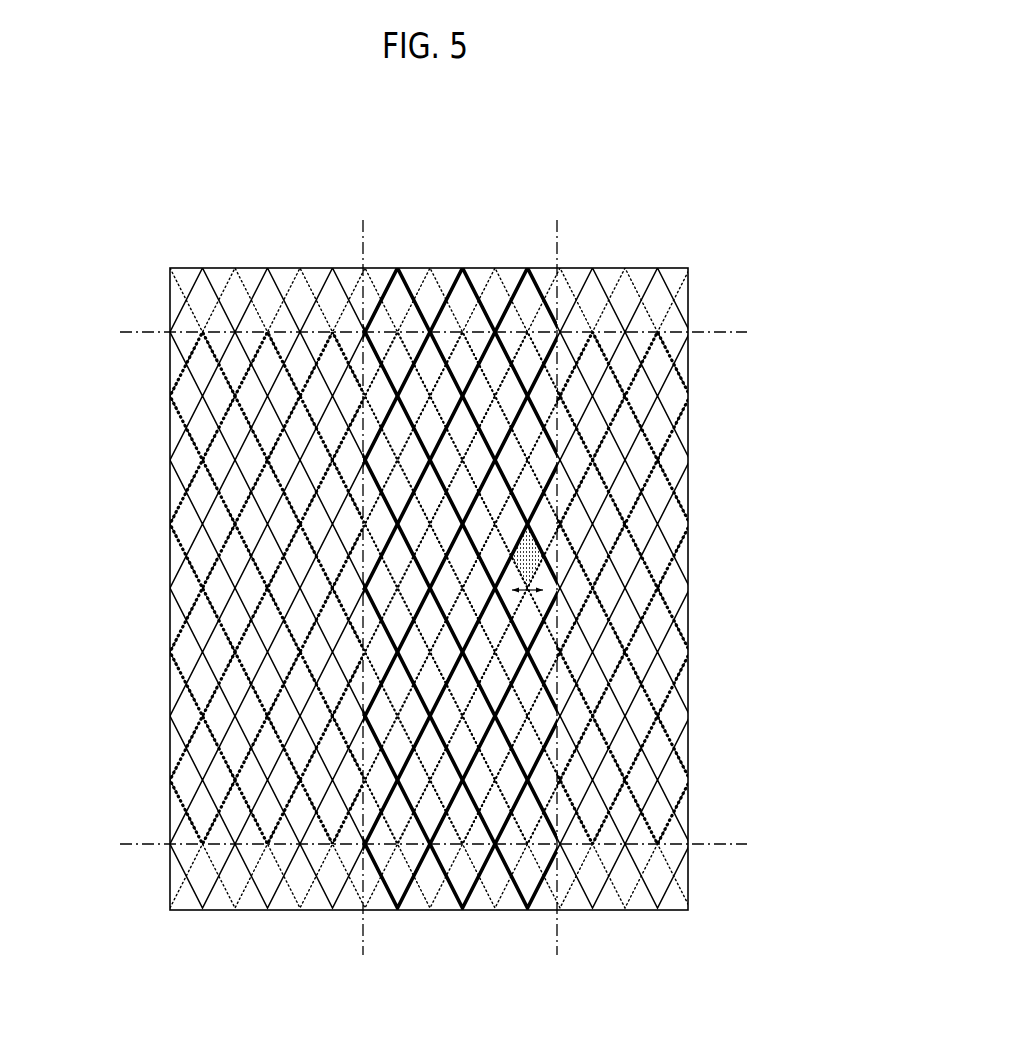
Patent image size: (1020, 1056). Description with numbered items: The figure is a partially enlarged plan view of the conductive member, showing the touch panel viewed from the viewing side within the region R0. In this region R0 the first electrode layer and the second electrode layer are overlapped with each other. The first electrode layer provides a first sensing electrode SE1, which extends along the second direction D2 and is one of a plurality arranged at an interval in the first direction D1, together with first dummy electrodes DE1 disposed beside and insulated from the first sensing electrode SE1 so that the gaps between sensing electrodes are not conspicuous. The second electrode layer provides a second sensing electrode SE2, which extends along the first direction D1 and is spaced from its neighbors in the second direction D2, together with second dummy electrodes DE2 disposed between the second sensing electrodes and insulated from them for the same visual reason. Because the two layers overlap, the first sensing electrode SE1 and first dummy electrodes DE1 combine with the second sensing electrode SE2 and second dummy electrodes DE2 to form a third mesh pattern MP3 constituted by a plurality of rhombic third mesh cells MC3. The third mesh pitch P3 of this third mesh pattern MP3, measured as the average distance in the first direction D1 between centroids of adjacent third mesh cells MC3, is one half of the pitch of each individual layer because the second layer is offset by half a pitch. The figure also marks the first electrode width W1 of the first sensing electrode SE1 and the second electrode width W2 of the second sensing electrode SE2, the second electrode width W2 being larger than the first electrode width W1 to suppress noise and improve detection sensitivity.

The region R0 is at (168, 885).
The first dummy electrode DE1 is at (688, 238).
The first sensing electrode SE1 is at (557, 238).
The second dummy electrode DE2 is at (733, 910).
The second sensing electrode SE2 is at (733, 332).
The first direction D1 is at (587, 192).
The second direction D2 is at (92, 292).
The first electrode width W1 is at (557, 945).
The second electrode width W2 is at (131, 844).
The third mesh cell MC3 is at (537, 548).
The third mesh pitch P3 is at (535, 595).
The third mesh pattern MP3 is at (662, 770).